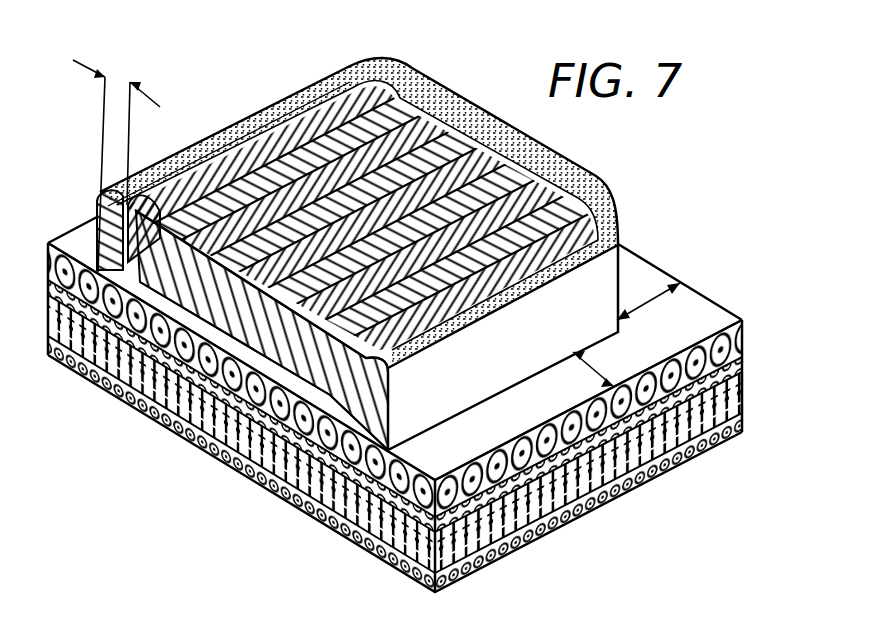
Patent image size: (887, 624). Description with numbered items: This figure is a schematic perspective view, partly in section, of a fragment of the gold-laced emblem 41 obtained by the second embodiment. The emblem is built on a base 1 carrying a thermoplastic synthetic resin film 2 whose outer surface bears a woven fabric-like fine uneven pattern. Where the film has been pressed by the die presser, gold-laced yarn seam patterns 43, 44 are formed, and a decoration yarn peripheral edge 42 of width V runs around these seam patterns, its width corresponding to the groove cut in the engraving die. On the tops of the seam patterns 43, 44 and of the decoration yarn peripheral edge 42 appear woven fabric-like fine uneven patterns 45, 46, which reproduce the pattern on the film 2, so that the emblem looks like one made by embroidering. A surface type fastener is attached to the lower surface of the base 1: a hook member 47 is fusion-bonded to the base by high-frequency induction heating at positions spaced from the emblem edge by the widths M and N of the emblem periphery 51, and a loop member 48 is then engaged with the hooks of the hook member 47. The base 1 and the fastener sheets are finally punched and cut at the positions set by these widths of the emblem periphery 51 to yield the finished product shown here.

The base 1 is at (728, 342).
The thermoplastic synthetic resin film 2 is at (598, 278).
The gold-laced emblem 41 is at (452, 133).
The decoration yarn peripheral edge 42 is at (262, 108).
The gold-laced yarn seam pattern 43 is at (432, 123).
The gold-laced yarn seam pattern 44 is at (490, 178).
The woven fabric-like fine uneven pattern 45 is at (383, 98).
The woven fabric-like fine uneven pattern 46 is at (207, 143).
The hook member 47 is at (742, 356).
The loop member 48 is at (741, 412).
The emblem periphery 51 is at (578, 504).